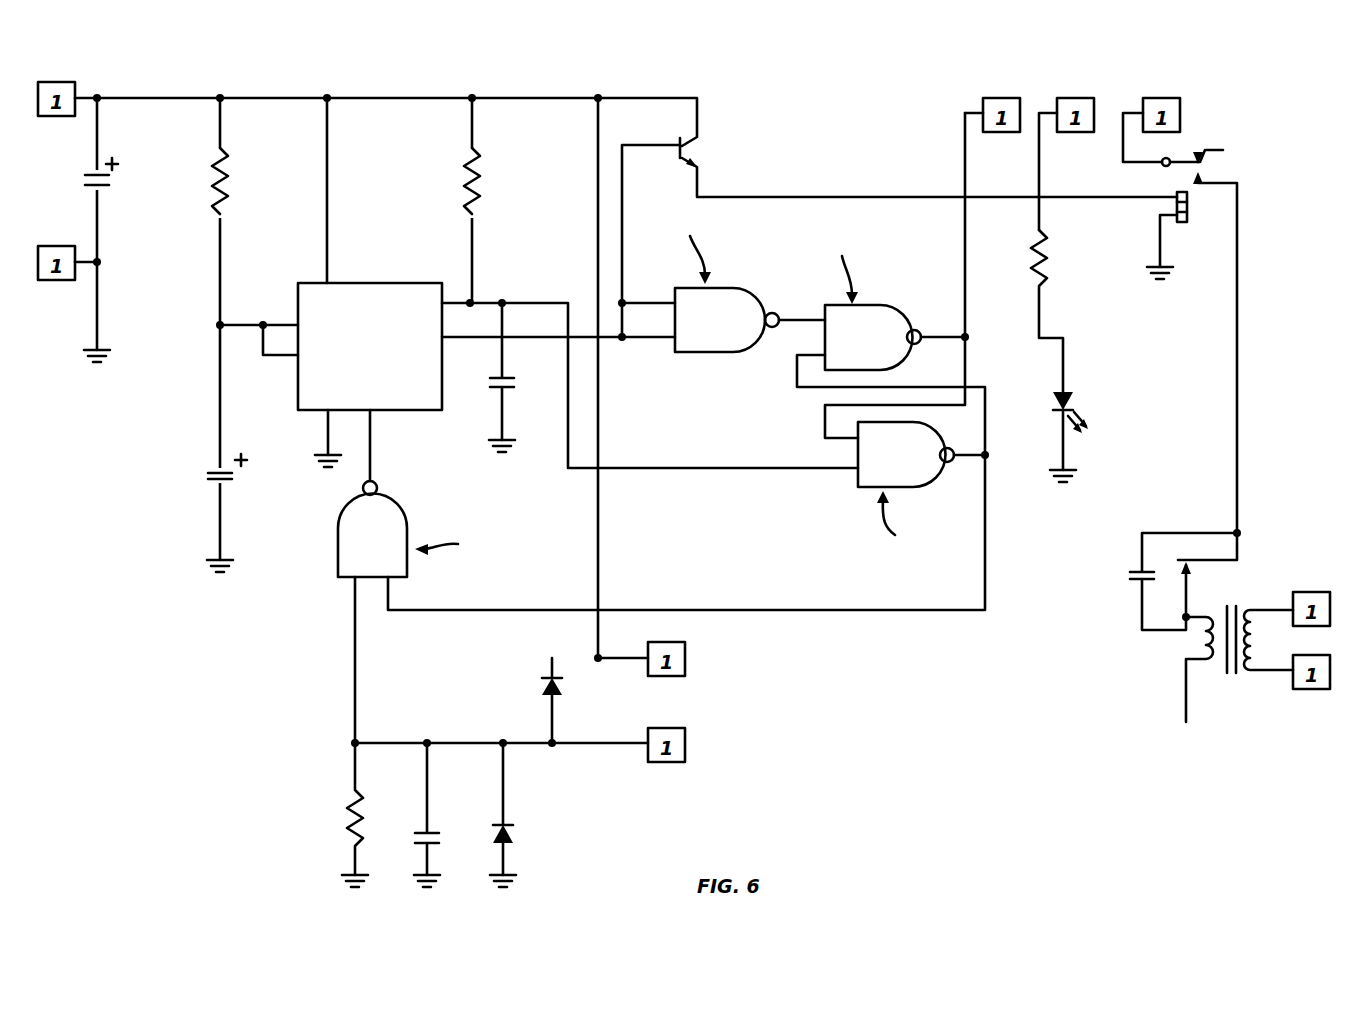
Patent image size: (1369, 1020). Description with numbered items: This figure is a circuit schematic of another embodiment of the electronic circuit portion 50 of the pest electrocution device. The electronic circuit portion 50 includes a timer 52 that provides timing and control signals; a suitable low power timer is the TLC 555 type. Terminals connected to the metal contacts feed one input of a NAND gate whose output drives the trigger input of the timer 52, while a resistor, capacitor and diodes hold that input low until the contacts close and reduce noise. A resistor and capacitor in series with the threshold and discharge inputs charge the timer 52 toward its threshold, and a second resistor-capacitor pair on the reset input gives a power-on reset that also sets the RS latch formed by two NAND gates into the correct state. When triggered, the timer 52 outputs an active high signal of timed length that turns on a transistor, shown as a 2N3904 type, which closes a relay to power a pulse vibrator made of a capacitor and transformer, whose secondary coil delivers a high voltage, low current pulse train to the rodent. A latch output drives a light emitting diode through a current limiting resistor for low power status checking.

The electronic circuit portion 50 is at (255, 665).
The timer 52 is at (430, 283).
The TLC 555 timer chip 555 is at (427, 434).
The transistor Q1 2N3904 is at (747, 165).